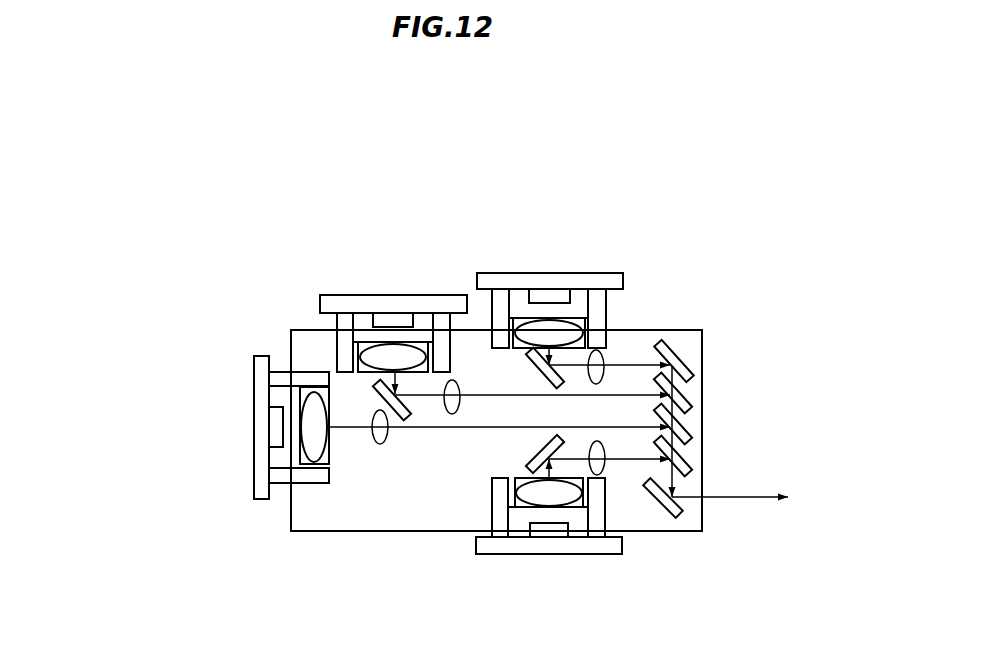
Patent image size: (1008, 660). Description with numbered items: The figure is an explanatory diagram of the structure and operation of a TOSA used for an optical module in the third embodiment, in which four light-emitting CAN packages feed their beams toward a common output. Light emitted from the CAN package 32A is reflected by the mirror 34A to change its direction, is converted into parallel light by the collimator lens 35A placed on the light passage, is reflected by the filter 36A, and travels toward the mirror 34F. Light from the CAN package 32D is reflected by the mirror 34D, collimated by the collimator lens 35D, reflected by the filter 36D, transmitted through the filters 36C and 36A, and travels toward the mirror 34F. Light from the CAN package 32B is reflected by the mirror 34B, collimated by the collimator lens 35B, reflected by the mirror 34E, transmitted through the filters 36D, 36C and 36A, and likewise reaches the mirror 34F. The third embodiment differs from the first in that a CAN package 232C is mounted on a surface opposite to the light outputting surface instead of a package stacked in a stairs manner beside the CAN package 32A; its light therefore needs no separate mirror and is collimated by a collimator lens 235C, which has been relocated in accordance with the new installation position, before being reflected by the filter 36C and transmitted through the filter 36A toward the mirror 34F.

The CAN package 232C is at (248, 433).
The collimator lens 235C is at (378, 446).
The CAN package 32D is at (397, 288).
The mirror 34D is at (383, 392).
The collimator lens 35D is at (449, 414).
The CAN package 32B is at (550, 267).
The mirror 34B is at (553, 375).
The collimator lens 35B is at (600, 361).
The mirror 34E is at (684, 368).
The filter 36D is at (684, 398).
The filter 36C is at (688, 430).
The filter 36A is at (690, 457).
The mirror 34F is at (673, 512).
The CAN package 32A is at (552, 560).
The mirror 34A is at (538, 467).
The collimator lens 35A is at (603, 477).